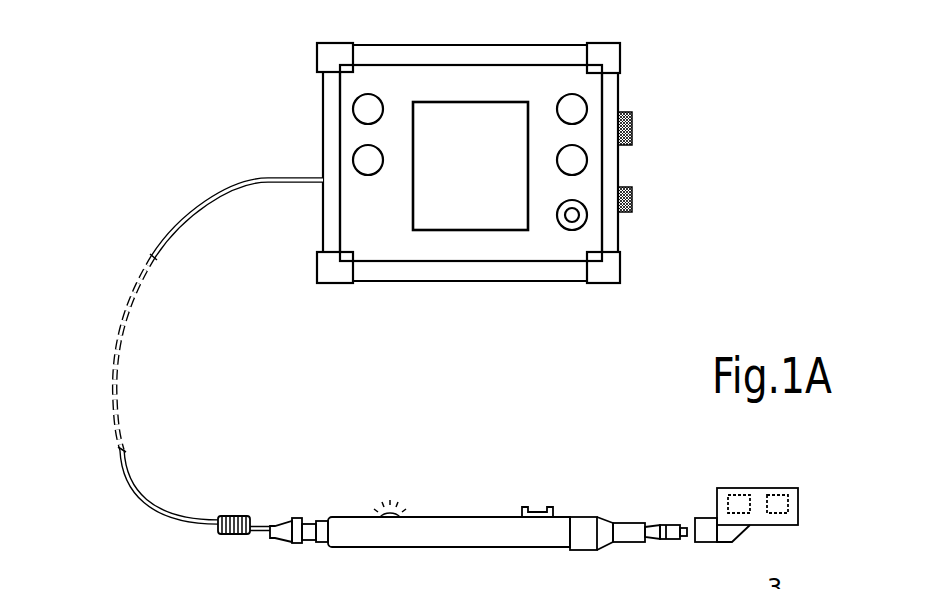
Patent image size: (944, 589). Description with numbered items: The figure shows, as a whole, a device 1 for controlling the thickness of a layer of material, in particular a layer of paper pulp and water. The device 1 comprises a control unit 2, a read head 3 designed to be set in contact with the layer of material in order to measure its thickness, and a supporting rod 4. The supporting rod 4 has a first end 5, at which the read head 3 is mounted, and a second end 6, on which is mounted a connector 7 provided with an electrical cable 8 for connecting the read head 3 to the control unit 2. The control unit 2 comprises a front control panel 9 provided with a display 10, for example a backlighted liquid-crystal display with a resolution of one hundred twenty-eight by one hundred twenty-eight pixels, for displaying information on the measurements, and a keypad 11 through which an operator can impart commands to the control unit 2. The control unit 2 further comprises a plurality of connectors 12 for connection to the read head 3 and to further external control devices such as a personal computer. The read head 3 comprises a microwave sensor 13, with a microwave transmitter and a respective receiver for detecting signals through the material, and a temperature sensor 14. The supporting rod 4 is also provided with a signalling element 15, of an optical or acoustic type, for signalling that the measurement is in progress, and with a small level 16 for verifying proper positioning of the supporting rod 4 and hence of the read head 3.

The device for controlling the thickness of a material 1 is at (188, 175).
The control unit 2 is at (643, 247).
The read head 3 is at (763, 478).
The supporting rod 4 is at (447, 495).
The first end 5 is at (663, 510).
The second end 6 is at (320, 508).
The connector 7 is at (285, 523).
The electrical cable 8 is at (236, 516).
The front control panel 9 is at (305, 208).
The display 10 is at (470, 107).
The keypad 11 is at (587, 133).
The connectors 12 is at (638, 142).
The microwave sensor 13 is at (740, 502).
The temperature sensor 14 is at (778, 502).
The signalling element 15 is at (388, 505).
The small level 16 is at (533, 507).